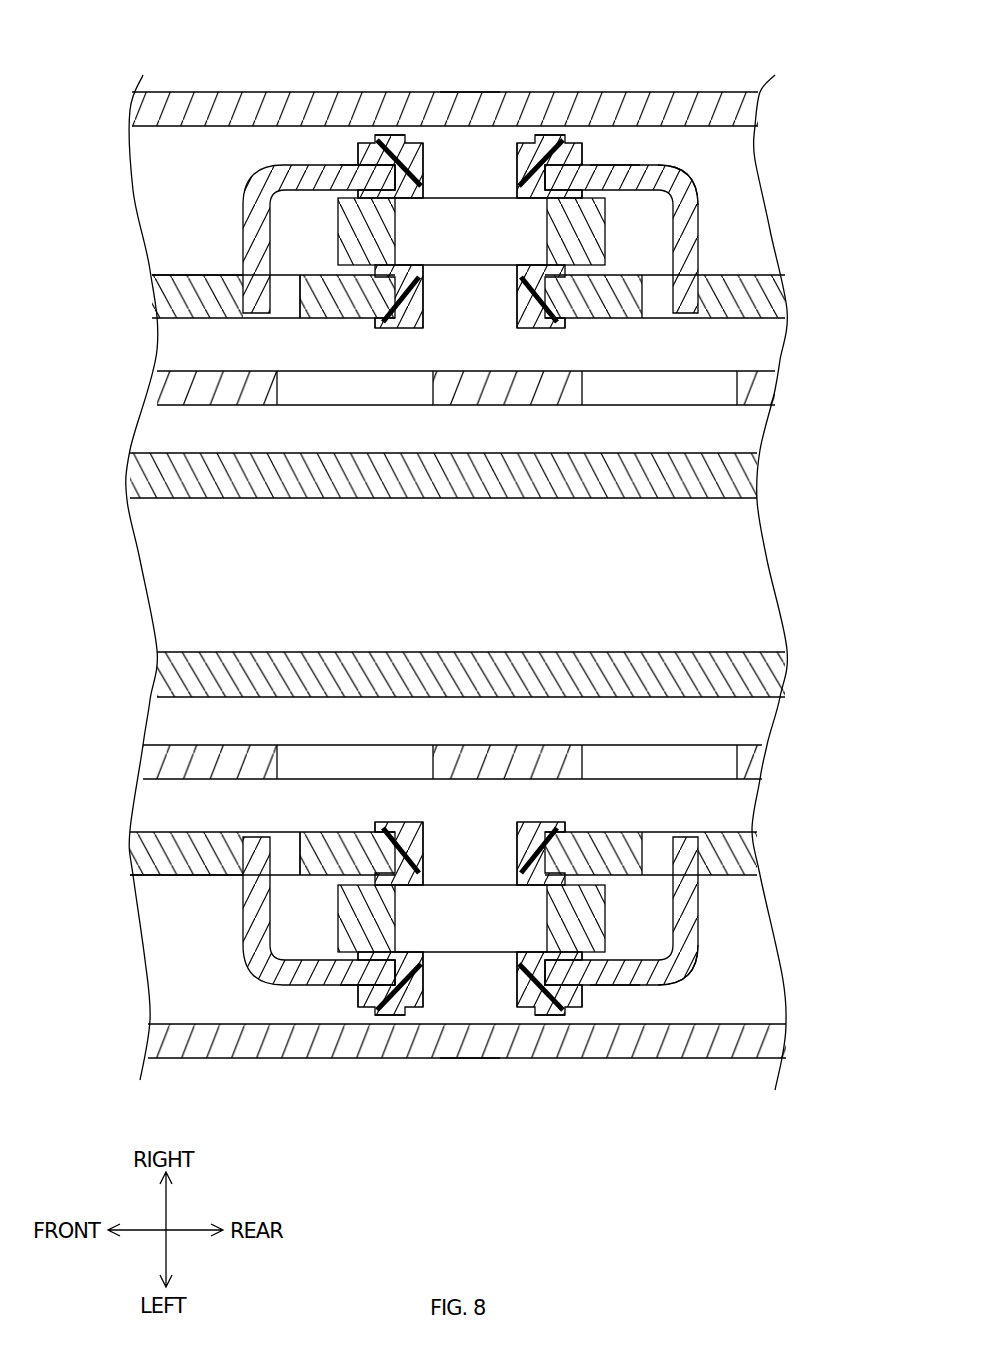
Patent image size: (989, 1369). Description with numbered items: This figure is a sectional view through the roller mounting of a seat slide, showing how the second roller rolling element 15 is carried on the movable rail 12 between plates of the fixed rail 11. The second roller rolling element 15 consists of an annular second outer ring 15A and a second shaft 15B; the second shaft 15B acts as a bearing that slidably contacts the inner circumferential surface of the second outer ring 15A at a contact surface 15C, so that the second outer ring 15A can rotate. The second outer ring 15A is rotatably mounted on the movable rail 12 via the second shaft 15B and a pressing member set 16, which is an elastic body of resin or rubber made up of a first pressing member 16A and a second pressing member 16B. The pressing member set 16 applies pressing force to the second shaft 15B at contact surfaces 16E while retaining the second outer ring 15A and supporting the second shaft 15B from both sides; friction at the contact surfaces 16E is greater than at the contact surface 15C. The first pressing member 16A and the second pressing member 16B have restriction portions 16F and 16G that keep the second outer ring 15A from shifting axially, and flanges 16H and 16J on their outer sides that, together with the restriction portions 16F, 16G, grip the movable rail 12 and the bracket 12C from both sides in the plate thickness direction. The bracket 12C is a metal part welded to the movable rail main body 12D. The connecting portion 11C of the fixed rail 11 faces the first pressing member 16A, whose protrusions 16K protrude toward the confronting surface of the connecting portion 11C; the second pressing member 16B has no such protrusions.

The fixed rail 11 is at (212, 88).
The connecting portion 11C is at (468, 118).
The movable rail 12 is at (186, 262).
The bracket 12C is at (617, 236).
The movable rail main body 12D is at (200, 264).
The second roller rolling element 15 is at (690, 205).
The second outer ring 15A is at (690, 172).
The second shaft 15B is at (470, 320).
The contact surface 15C is at (345, 172).
The pressing member set 16 is at (470, 575).
The first pressing member 16A is at (578, 127).
The second pressing member 16B is at (570, 330).
The contact surfaces 16E is at (423, 150).
The restriction portion 16F is at (375, 140).
The restriction portion 16G is at (370, 194).
The flange 16H is at (395, 155).
The flange 16J is at (565, 326).
The protrusions 16K is at (415, 168).